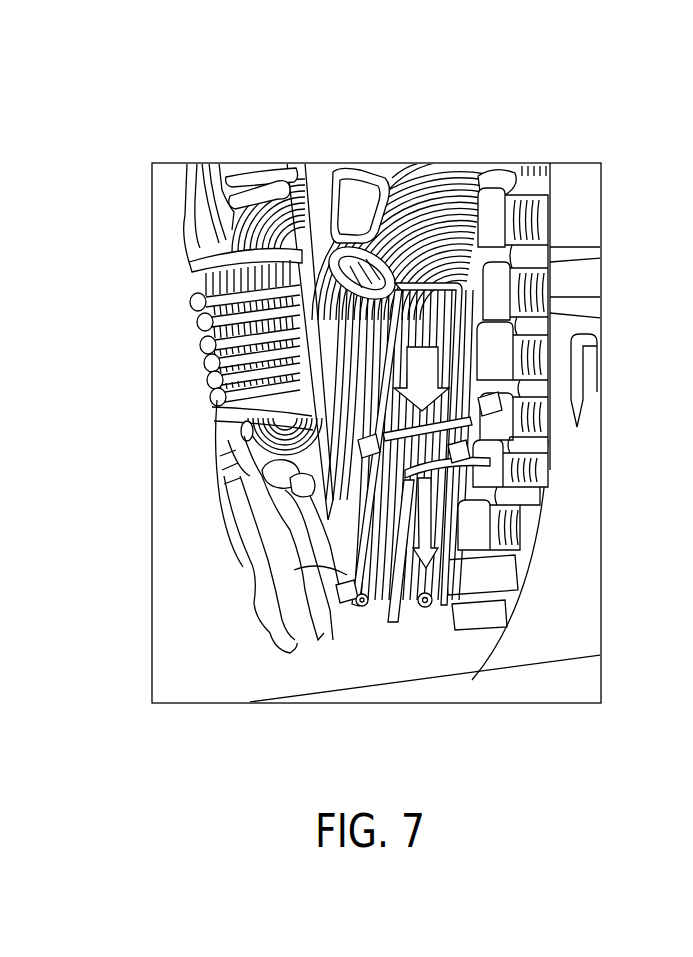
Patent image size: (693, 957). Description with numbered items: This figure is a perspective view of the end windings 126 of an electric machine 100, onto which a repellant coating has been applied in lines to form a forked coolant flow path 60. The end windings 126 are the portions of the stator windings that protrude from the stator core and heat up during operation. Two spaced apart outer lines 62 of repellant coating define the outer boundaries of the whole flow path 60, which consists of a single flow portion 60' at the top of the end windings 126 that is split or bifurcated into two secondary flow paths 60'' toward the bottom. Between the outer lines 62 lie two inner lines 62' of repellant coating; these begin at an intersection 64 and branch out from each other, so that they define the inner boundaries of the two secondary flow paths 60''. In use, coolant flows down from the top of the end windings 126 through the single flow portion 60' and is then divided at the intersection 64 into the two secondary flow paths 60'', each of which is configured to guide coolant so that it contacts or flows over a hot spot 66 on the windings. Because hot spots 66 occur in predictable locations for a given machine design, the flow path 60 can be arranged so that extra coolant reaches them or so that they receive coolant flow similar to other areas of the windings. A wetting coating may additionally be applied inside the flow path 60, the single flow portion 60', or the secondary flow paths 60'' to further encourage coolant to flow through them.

The electric machine 100 is at (498, 136).
The end windings 126 is at (420, 200).
The flow path 60 is at (556, 391).
The single flow portion 60' is at (236, 412).
The secondary flow paths 60'' is at (370, 543).
The outer lines 62 is at (371, 523).
The inner lines 62' is at (421, 612).
The intersection 64 is at (405, 472).
The hot spot 66 is at (360, 606).